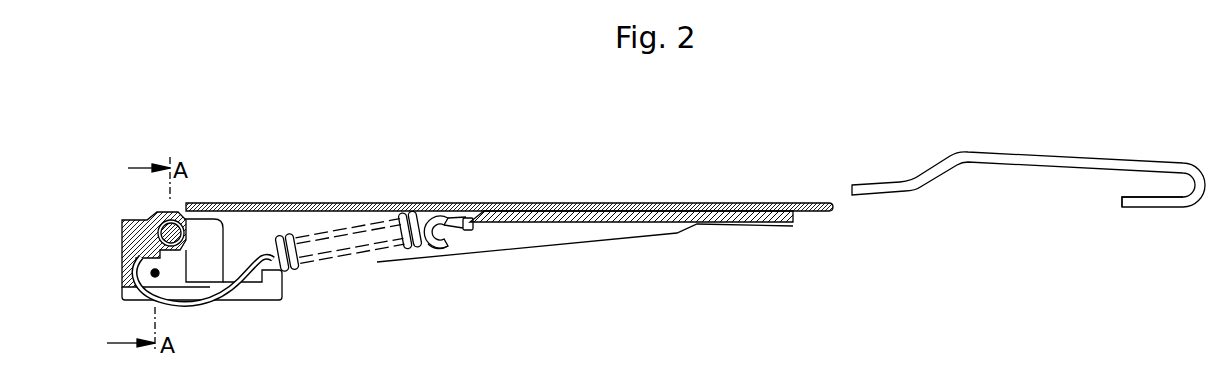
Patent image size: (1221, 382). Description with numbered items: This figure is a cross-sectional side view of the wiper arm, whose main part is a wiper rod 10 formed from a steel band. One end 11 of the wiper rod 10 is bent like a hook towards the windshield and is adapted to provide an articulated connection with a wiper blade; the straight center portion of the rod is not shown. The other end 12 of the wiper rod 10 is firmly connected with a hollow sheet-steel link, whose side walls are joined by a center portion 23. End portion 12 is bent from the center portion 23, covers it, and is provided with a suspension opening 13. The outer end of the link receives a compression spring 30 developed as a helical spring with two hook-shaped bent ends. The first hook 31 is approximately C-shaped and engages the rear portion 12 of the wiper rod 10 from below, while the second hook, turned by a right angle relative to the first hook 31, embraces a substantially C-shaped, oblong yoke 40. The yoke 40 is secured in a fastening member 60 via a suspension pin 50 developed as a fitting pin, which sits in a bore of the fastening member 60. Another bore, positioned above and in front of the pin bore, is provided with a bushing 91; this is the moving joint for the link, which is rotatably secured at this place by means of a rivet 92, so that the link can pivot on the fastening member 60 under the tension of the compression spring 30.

The wiper rod 10 is at (813, 205).
The end 11 is at (1160, 205).
The other end 12 is at (577, 224).
The suspension opening 13 is at (470, 228).
The center portion 23 is at (665, 205).
The compression spring 30 is at (450, 216).
The first hook 31 is at (445, 248).
The yoke 40 is at (252, 250).
The suspension pin 50 is at (160, 273).
The fastening member 60 is at (136, 221).
The bushing 91 is at (175, 213).
The rivet 92 is at (187, 240).